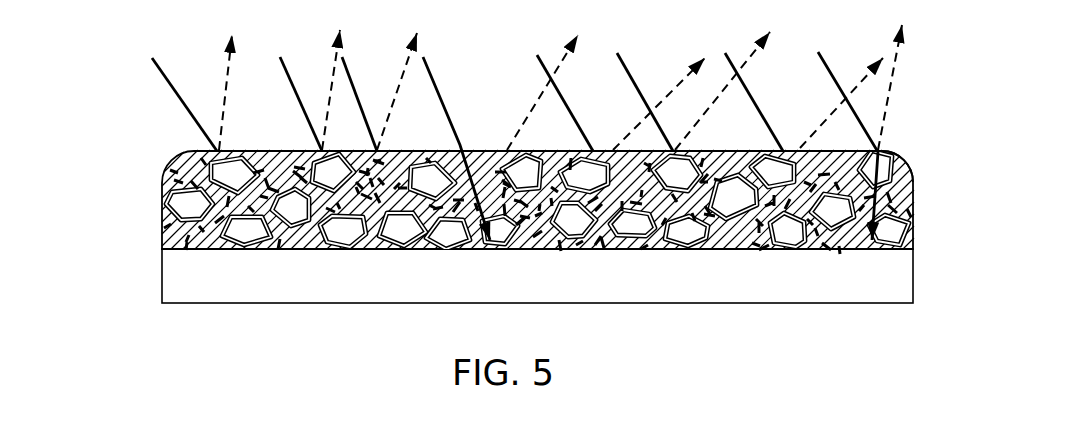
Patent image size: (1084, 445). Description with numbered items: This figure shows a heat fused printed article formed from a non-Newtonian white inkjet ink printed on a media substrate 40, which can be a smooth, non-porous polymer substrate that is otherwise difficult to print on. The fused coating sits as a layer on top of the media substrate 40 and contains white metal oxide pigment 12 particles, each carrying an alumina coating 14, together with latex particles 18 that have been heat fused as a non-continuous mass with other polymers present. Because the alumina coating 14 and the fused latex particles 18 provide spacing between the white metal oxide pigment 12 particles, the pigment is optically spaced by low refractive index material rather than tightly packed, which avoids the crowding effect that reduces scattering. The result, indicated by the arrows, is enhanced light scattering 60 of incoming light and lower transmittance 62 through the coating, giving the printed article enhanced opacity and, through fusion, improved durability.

The white metal oxide pigment 12 is at (190, 200).
The alumina coating 14 is at (172, 222).
The latex particles 18 is at (183, 161).
The media substrate 40 is at (526, 284).
The light scattering 60 is at (540, 97).
The transmittance 62 is at (903, 163).